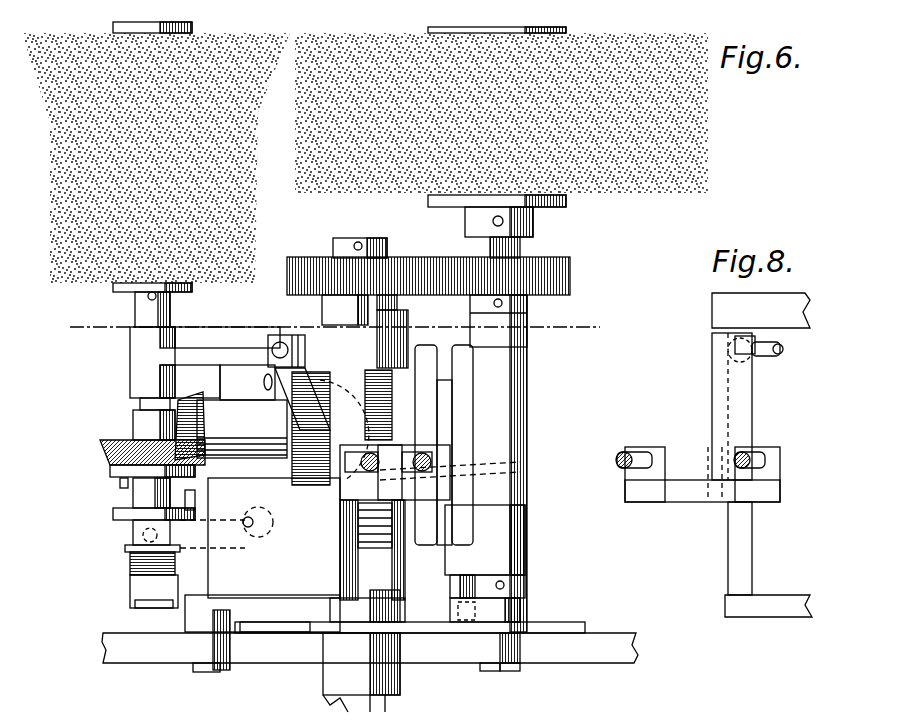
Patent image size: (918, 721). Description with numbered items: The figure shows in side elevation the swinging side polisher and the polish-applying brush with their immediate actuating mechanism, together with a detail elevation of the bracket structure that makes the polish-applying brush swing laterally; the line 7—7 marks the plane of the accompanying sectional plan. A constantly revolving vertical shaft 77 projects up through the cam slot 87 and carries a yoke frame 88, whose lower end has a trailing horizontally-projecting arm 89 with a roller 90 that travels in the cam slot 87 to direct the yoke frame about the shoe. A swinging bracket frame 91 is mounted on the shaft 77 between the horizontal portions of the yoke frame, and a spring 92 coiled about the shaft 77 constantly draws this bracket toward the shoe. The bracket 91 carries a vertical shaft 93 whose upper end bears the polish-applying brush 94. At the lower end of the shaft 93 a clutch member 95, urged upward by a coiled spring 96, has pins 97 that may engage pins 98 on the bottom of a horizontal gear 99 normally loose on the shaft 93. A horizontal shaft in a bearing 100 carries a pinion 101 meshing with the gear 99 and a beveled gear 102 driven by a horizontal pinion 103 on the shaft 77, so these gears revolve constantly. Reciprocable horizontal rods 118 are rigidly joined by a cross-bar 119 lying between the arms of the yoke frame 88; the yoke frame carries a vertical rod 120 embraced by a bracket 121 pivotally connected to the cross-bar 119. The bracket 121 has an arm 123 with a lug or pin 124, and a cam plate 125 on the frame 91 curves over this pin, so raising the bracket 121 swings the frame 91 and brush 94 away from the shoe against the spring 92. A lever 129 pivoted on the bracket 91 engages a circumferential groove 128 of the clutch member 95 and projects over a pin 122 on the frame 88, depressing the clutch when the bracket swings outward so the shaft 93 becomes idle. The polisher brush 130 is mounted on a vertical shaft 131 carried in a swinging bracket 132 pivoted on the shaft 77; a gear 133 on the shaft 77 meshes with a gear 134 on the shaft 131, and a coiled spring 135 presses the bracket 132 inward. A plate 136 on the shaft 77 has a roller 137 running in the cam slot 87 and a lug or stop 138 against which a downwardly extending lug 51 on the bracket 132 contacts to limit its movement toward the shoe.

In FIG. 6, the section line 7- 7 is at (322, 327).
In FIG. 6, the downwardly extending lug 51 is at (462, 588).
In FIG. 6, the vertical shaft 77 is at (388, 705).
In FIG. 6, the cam slot 87 is at (636, 648).
In FIG. 6, the yoke frame 88 is at (400, 615).
In FIG. 8, the yoke frame 88 is at (778, 604).
In FIG. 6, the horizontally-projecting arm 89 is at (242, 600).
In FIG. 6, the roller 90 is at (193, 650).
In FIG. 6, the swinging bracket frame 91 is at (133, 360).
In FIG. 6, the spring 92 is at (394, 405).
In FIG. 6, the vertical shaft 93 is at (137, 403).
In FIG. 6, the polish-applying brush 94 is at (65, 127).
In FIG. 6, the clutch member 95 is at (113, 513).
In FIG. 6, the coiled spring 96 is at (130, 565).
In FIG. 6, the pins 97 is at (198, 502).
In FIG. 6, the pins 98 is at (120, 480).
In FIG. 6, the horizontal gear 99 is at (105, 450).
In FIG. 6, the horizontal bearing 100 is at (242, 429).
In FIG. 6, the pinion 101 is at (190, 410).
In FIG. 6, the beveled gear 102 is at (310, 428).
In FIG. 6, the horizontal pinion 103 is at (490, 468).
In FIG. 6, the reciprocable horizontal rods 118 is at (432, 458).
In FIG. 8, the reciprocable horizontal rods 118 is at (618, 460).
In FIG. 6, the cross-bar 119 is at (408, 492).
In FIG. 8, the cross-bar 119 is at (687, 497).
In FIG. 6, the vertical rod 120 is at (305, 600).
In FIG. 8, the vertical rod 120 is at (745, 552).
In FIG. 8, the bracket 121 is at (722, 402).
In FIG. 6, the pin 122 is at (372, 550).
In FIG. 8, the arm 123 is at (745, 345).
In FIG. 6, the lug or pin 124 is at (278, 340).
In FIG. 8, the lug or pin 124 is at (780, 355).
In FIG. 6, the cam plate 125 is at (280, 396).
In FIG. 6, the circumferential groove 128 is at (132, 538).
In FIG. 6, the lever 129 is at (455, 494).
In FIG. 6, the polisher brush 130 is at (687, 153).
In FIG. 6, the vertical shaft 131 is at (522, 247).
In FIG. 6, the swinging bracket 132 is at (448, 430).
In FIG. 6, the gear 133 is at (308, 248).
In FIG. 6, the gear 134 is at (570, 272).
In FIG. 6, the coiled spring 135 is at (378, 548).
In FIG. 6, the plate 136 is at (573, 625).
In FIG. 6, the roller 137 is at (518, 660).
In FIG. 6, the lug or stop 138 is at (512, 614).